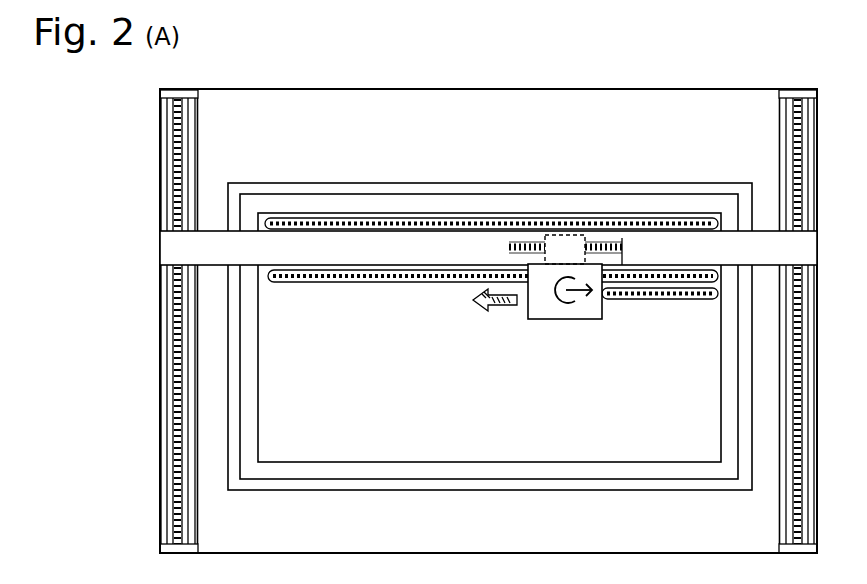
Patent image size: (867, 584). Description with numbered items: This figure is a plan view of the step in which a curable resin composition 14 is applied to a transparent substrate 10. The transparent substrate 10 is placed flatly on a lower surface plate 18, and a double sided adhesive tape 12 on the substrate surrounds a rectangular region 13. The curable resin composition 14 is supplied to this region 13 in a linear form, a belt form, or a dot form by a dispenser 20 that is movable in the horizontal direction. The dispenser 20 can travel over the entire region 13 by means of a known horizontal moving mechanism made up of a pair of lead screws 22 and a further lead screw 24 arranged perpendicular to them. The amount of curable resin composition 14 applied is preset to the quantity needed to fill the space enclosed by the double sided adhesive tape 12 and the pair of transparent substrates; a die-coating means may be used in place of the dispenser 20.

The transparent substrate 10 is at (567, 182).
The double sided adhesive tape 12 is at (645, 203).
The rectangular region 13 is at (524, 381).
The curable resin composition 14 is at (408, 216).
The lower surface plate 18 is at (525, 97).
The dispenser 20 is at (569, 324).
The lead screws 22 is at (183, 152).
The lead screw 24 is at (633, 284).